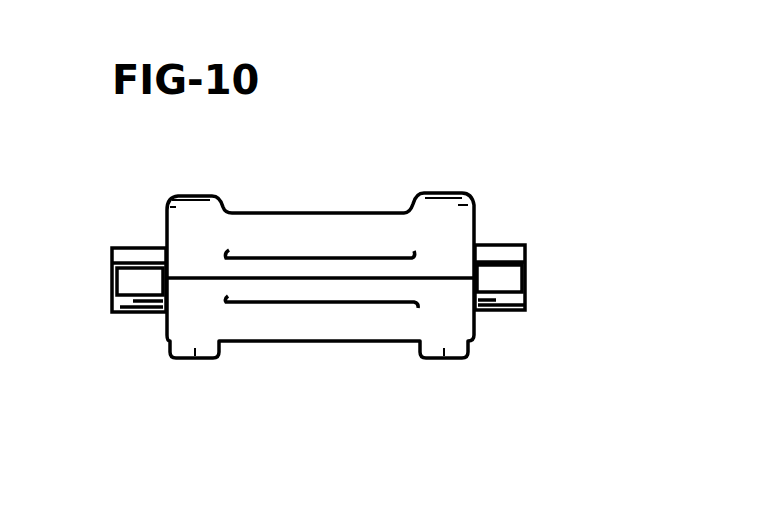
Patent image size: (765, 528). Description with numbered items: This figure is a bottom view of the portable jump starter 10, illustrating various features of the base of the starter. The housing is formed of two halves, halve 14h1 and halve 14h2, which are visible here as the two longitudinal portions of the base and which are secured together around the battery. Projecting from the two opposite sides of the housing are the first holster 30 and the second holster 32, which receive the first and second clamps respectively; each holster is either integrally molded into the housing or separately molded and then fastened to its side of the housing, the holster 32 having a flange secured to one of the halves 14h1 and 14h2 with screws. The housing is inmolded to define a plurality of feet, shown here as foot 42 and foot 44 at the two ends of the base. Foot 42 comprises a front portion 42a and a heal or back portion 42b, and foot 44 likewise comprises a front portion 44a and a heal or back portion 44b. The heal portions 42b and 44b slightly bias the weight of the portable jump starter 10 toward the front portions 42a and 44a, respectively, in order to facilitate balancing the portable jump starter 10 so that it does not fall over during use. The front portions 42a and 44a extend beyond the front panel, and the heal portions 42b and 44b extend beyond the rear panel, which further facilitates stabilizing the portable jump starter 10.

The portable jump starter 10 is at (300, 196).
The housing halve 14h1 is at (357, 213).
The housing halve 14h2 is at (347, 339).
The first holster 30 is at (112, 278).
The second holster 32 is at (527, 273).
The foot 42 is at (198, 195).
The front portion 42a is at (170, 205).
The heal or back portion 42b is at (195, 354).
The foot 44 is at (440, 191).
The front portion 44a is at (457, 209).
The heal or back portion 44b is at (444, 355).